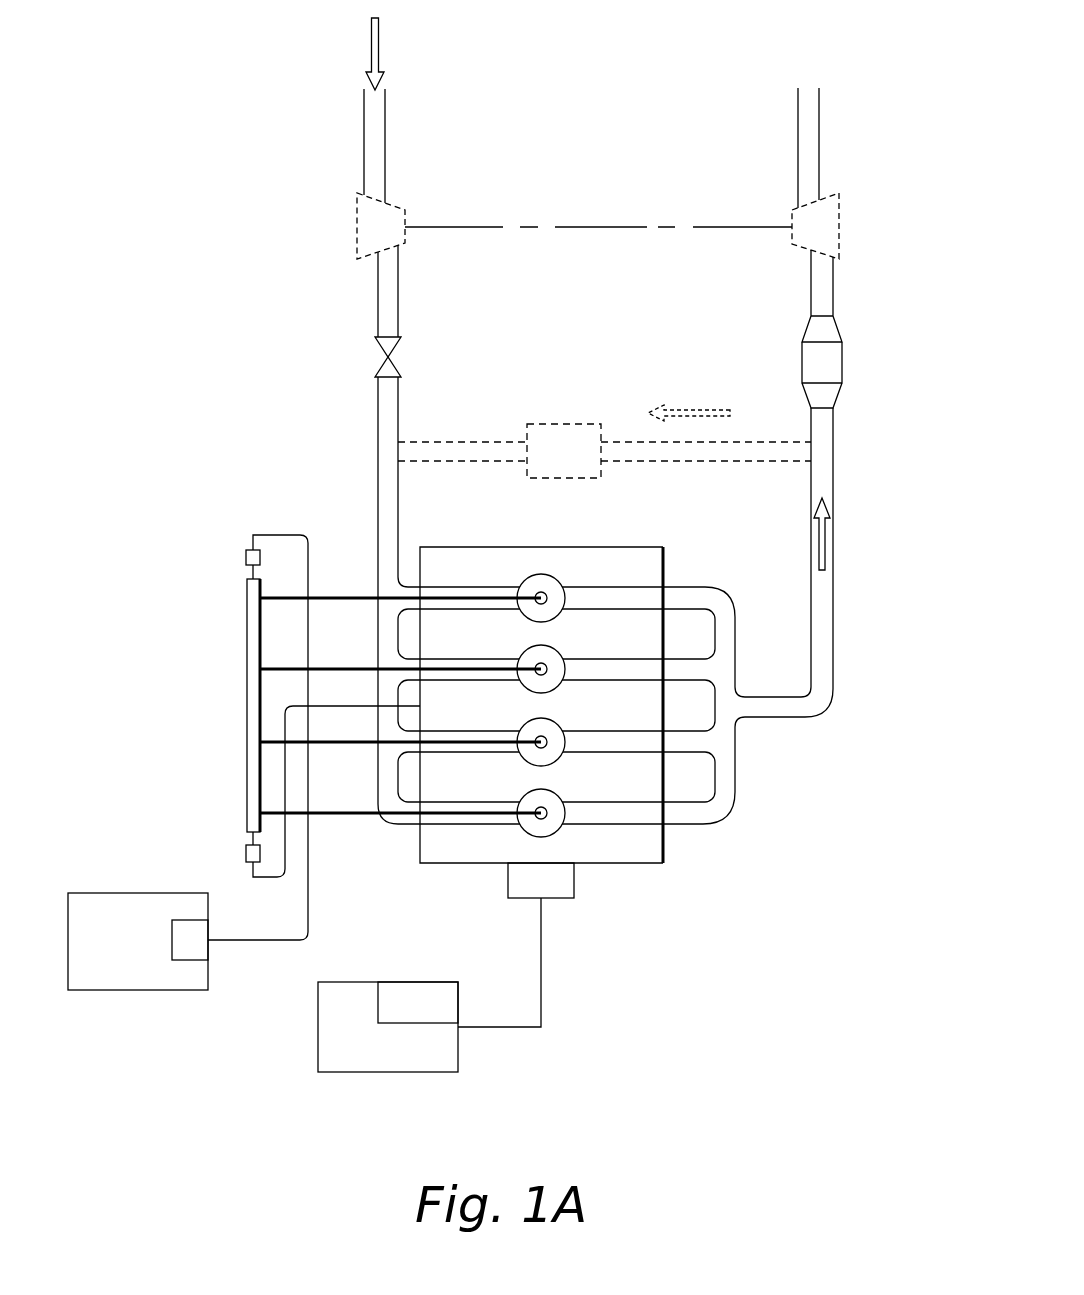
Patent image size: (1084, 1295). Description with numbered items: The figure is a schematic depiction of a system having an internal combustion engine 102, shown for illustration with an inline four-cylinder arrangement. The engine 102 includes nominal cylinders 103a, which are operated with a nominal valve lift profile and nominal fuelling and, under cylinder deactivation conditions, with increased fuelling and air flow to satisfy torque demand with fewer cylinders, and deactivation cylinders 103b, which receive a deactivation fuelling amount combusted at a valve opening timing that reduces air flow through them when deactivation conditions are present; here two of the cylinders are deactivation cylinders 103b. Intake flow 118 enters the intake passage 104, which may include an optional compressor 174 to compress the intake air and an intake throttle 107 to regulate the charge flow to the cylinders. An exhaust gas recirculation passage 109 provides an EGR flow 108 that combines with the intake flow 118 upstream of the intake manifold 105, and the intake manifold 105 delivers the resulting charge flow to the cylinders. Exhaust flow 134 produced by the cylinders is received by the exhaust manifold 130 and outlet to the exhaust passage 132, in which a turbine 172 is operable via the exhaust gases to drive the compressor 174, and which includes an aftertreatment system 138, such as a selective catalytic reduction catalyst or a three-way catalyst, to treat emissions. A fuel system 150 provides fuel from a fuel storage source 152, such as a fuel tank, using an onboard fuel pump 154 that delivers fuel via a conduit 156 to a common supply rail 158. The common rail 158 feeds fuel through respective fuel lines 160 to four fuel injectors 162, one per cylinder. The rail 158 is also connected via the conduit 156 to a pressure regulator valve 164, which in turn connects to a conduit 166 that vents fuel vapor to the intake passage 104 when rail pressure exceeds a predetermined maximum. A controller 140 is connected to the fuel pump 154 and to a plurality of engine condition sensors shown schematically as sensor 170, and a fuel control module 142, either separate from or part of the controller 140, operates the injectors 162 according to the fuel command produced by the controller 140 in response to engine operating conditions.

The engine 102 is at (648, 866).
The nominal cylinders 103a is at (560, 582).
The deactivation cylinders 103b is at (560, 652).
The intake passage 104 is at (378, 440).
The intake manifold 105 is at (388, 840).
The intake throttle 107 is at (377, 361).
The EGR flow 108 is at (688, 410).
The exhaust gas recirculation passage 109 is at (485, 440).
The intake flow 118 is at (385, 36).
The exhaust manifold 130 is at (738, 780).
The exhaust passage 132 is at (835, 610).
The exhaust flow 134 is at (825, 540).
The aftertreatment system 138 is at (842, 350).
The controller 140 is at (388, 1079).
The fuel control module 142 is at (418, 1002).
The fuel system 150 is at (326, 713).
The fuel storage source 152 is at (115, 992).
The fuel pump 154 is at (192, 962).
The conduit 156 is at (308, 918).
The common supply rail 158 is at (247, 620).
The fuel lines 160 is at (370, 598).
The fuel injectors 162 is at (541, 592).
The pressure regulator valve 164 is at (247, 850).
The conduit 166 is at (283, 716).
The sensor 170 is at (576, 892).
The turbine 172 is at (840, 222).
The compressor 174 is at (357, 212).